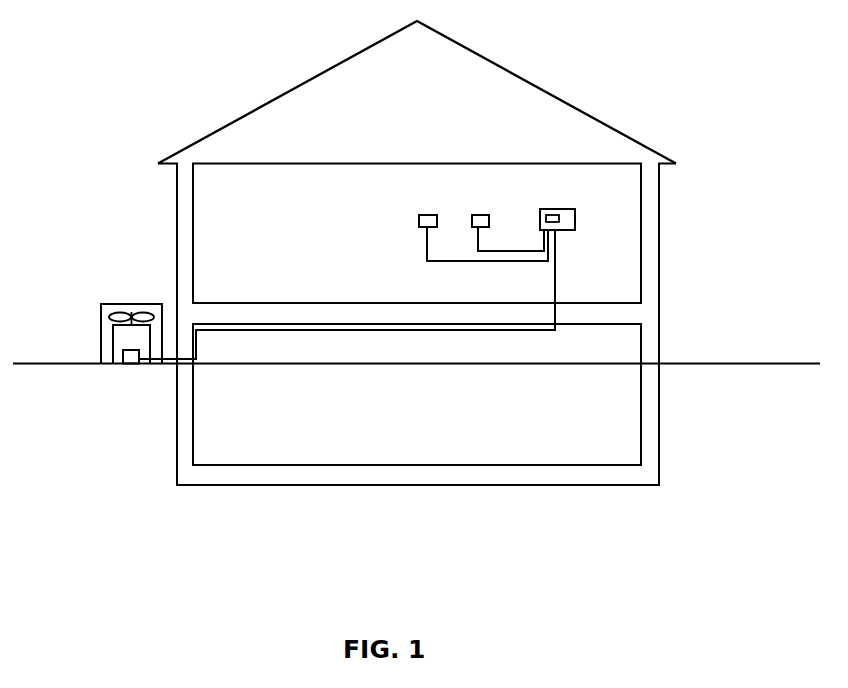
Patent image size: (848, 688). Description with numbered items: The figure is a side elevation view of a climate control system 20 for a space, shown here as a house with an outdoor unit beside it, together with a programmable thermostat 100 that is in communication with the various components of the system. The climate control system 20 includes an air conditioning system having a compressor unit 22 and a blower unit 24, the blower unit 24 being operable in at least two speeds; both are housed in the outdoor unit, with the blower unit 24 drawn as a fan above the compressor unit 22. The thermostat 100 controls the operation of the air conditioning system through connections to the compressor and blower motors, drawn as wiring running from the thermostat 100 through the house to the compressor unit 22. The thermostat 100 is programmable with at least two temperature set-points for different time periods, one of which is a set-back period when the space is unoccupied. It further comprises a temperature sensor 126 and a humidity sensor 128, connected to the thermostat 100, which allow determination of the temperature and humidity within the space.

The climate control system 20 is at (121, 490).
The compressor unit 22 is at (128, 354).
The blower unit 24 is at (118, 314).
The programmable thermostat 100 is at (541, 218).
The temperature sensor 126 is at (472, 216).
The humidity sensor 128 is at (419, 216).